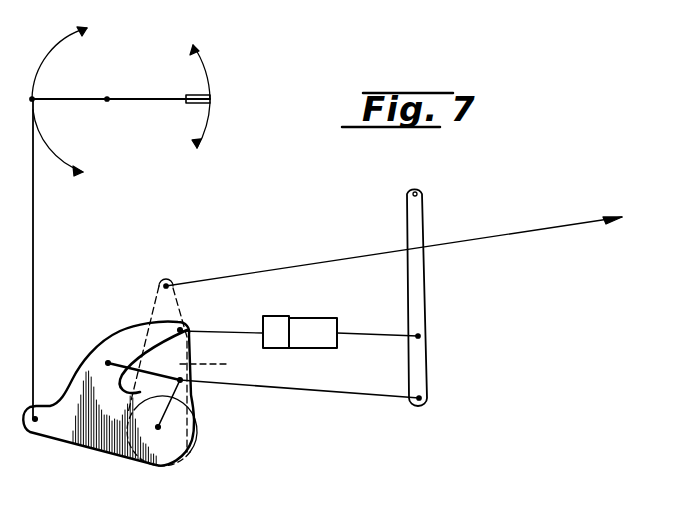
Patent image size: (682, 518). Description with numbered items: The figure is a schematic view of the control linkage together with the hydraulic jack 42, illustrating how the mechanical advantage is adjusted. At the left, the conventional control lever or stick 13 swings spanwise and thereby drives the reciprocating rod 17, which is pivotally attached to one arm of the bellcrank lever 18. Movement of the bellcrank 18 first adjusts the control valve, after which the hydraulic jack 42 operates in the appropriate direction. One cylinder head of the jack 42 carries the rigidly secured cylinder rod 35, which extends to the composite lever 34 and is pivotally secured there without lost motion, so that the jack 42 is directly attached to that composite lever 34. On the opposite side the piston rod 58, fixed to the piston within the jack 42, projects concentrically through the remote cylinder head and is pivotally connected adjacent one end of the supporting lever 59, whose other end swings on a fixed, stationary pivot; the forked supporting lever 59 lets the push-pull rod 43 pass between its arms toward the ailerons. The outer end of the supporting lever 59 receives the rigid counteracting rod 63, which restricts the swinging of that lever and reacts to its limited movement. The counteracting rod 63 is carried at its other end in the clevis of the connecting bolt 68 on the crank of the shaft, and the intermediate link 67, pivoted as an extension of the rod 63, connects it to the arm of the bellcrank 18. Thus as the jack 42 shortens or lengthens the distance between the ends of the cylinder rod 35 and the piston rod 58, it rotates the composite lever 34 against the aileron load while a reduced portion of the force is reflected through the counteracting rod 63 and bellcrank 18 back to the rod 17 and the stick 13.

The control lever or stick 13 is at (127, 98).
The reciprocating rod 17 is at (35, 232).
The bellcrank lever 18 is at (88, 455).
The composite lever 34 is at (187, 372).
The cylinder rod 35 is at (233, 330).
The hydraulic jack 42 is at (315, 322).
The push-pull rod 43 is at (308, 263).
The piston rod 58 is at (368, 328).
The supporting lever 59 is at (422, 278).
The counteracting rod 63 is at (333, 393).
The intermediate link 67 is at (128, 385).
The connecting bolt 68 is at (167, 409).